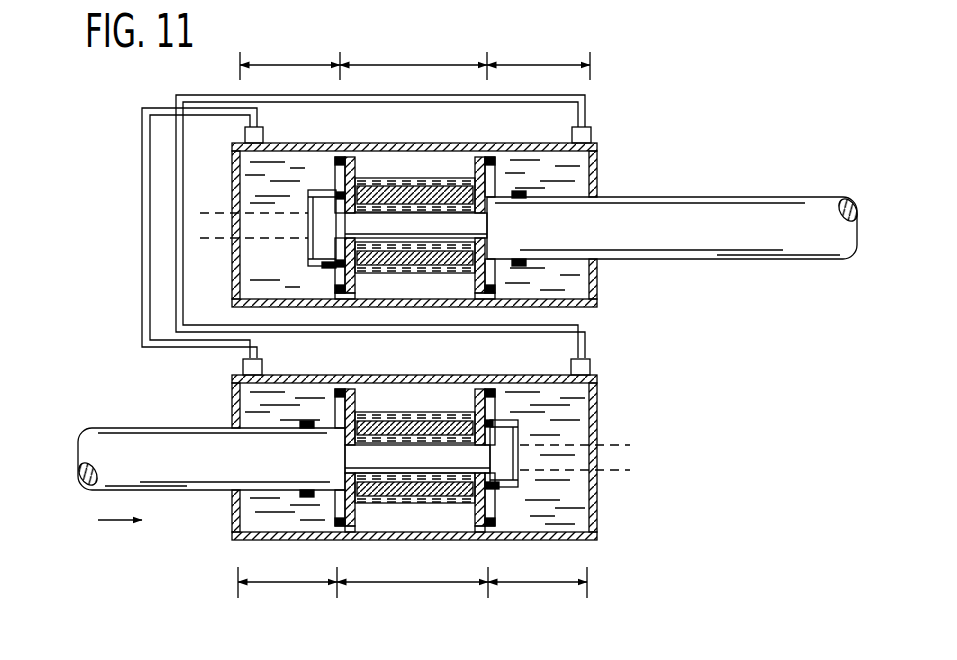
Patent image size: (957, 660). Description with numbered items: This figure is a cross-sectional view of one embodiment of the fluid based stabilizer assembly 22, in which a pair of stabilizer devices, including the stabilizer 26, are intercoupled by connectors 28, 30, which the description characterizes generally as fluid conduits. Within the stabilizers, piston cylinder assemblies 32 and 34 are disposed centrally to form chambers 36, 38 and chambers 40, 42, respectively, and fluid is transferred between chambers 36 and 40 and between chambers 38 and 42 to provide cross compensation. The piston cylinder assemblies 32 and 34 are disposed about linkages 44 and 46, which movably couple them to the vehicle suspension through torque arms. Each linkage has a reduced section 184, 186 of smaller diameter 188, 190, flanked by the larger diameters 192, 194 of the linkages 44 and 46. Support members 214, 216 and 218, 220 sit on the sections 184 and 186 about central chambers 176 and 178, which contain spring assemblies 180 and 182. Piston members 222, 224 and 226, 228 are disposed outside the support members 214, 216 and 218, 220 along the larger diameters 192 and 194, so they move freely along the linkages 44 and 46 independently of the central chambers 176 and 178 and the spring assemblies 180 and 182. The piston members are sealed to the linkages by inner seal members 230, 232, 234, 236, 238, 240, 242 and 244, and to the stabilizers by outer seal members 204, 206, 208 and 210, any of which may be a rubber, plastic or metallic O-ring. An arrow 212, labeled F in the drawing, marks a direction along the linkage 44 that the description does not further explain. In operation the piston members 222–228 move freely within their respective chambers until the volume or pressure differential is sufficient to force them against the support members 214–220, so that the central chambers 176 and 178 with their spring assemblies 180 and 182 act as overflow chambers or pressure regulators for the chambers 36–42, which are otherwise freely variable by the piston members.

The stabilizer assembly 22 is at (718, 64).
The stabilizer 26 is at (707, 152).
The first hydraulic conduit 28 is at (142, 243).
The second hydraulic conduit 30 is at (176, 200).
The piston cylinder assembly 32 is at (410, 372).
The piston cylinder assembly 34 is at (390, 140).
The chamber 36 is at (287, 576).
The chamber 38 is at (537, 576).
The chamber 40 is at (290, 60).
The chamber 42 is at (538, 60).
The linkage 44 is at (104, 426).
The linkage 46 is at (791, 197).
The central chamber 176 is at (387, 534).
The central chamber 178 is at (382, 158).
The spring assembly 180 is at (430, 534).
The spring assembly 182 is at (451, 180).
The section of linkage 184 is at (412, 576).
The section of linkage 186 is at (413, 60).
The diameter 188 is at (620, 497).
The diameter 190 is at (207, 241).
The diameter 192 is at (162, 516).
The diameter 194 is at (675, 168).
The outer seal member 204 is at (337, 534).
The outer seal member 206 is at (485, 534).
The outer seal member 208 is at (337, 305).
The outer seal member 210 is at (482, 305).
The applied force direction 212 is at (118, 521).
The support member 214 is at (355, 534).
The support member 216 is at (467, 534).
The support member 218 is at (347, 157).
The support member 220 is at (487, 155).
The piston member 222 is at (323, 393).
The piston member 224 is at (497, 415).
The piston member 226 is at (328, 267).
The piston member 228 is at (528, 281).
The inner seal member 230 is at (308, 497).
The inner seal member 232 is at (300, 502).
The inner seal member 234 is at (513, 497).
The inner seal member 236 is at (520, 491).
The inner seal member 238 is at (327, 203).
The inner seal member 240 is at (308, 192).
The inner seal member 242 is at (552, 148).
The inner seal member 244 is at (535, 192).